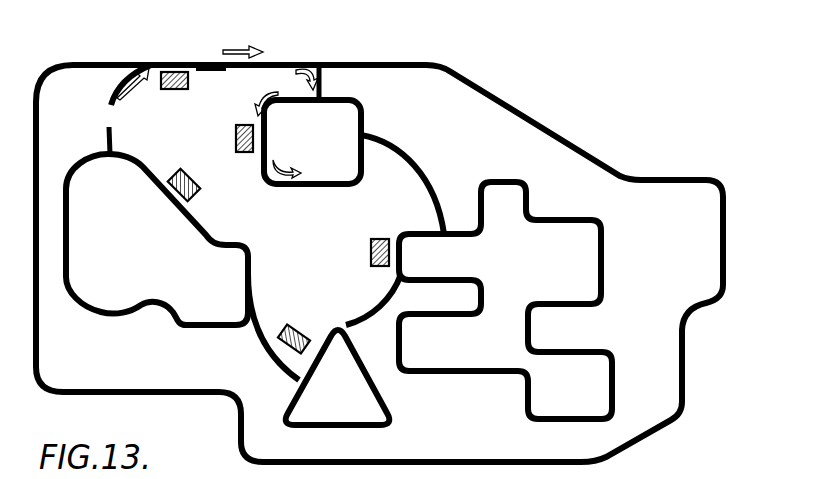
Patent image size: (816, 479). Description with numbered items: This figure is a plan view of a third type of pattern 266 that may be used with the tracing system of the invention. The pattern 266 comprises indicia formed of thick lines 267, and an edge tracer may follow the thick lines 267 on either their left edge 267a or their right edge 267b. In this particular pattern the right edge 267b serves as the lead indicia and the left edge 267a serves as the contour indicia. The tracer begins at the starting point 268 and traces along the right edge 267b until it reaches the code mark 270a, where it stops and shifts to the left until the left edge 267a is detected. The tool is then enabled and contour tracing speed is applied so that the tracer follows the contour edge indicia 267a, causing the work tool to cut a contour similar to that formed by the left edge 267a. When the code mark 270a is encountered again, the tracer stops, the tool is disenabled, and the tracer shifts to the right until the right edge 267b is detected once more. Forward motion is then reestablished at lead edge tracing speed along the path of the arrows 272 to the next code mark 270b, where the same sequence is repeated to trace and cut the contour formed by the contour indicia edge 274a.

The pattern 266 is at (163, 23).
The thick lines 267 is at (100, 57).
The left edge 267a is at (200, 62).
The right edge 267b is at (217, 67).
The starting point 268 is at (110, 100).
The code mark 270a is at (165, 88).
The code mark 270b is at (234, 131).
The arrows 272 is at (300, 75).
The contour indicia edge 274a is at (267, 142).